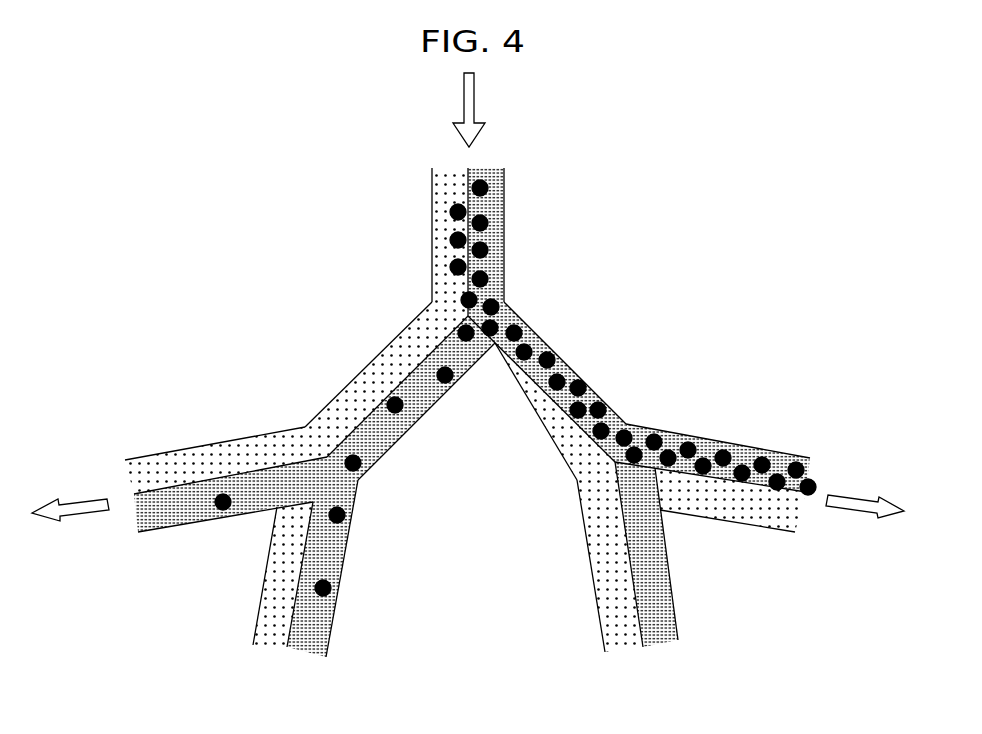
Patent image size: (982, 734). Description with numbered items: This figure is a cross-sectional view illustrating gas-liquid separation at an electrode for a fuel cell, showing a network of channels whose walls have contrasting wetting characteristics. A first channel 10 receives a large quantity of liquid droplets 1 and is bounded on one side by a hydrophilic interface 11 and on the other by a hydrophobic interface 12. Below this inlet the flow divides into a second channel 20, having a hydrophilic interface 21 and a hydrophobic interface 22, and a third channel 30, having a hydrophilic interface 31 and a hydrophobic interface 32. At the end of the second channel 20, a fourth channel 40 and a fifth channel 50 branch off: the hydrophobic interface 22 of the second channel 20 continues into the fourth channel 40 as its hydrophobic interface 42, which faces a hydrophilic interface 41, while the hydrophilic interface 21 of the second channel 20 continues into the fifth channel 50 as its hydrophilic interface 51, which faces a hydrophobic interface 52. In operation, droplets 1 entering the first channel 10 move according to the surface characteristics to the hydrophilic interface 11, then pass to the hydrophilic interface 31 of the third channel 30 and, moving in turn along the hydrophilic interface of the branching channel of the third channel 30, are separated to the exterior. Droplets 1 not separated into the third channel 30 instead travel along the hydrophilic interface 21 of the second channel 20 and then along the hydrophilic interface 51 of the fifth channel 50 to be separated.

The liquid droplets 1 is at (452, 207).
The first channel 10 is at (523, 183).
The hydrophilic interface 11 is at (492, 252).
The hydrophobic interface 12 is at (443, 244).
The second channel 20 is at (342, 385).
The hydrophilic interface 21 is at (388, 447).
The hydrophobic interface 22 is at (380, 368).
The third channel 30 is at (597, 383).
The hydrophilic interface 31 is at (540, 343).
The hydrophobic interface 32 is at (533, 423).
The fourth channel 40 is at (142, 447).
The hydrophilic interface 41 is at (167, 517).
The hydrophobic interface 42 is at (182, 448).
The fifth channel 50 is at (350, 578).
The hydrophilic interface 51 is at (330, 620).
The hydrophobic interface 52 is at (270, 625).